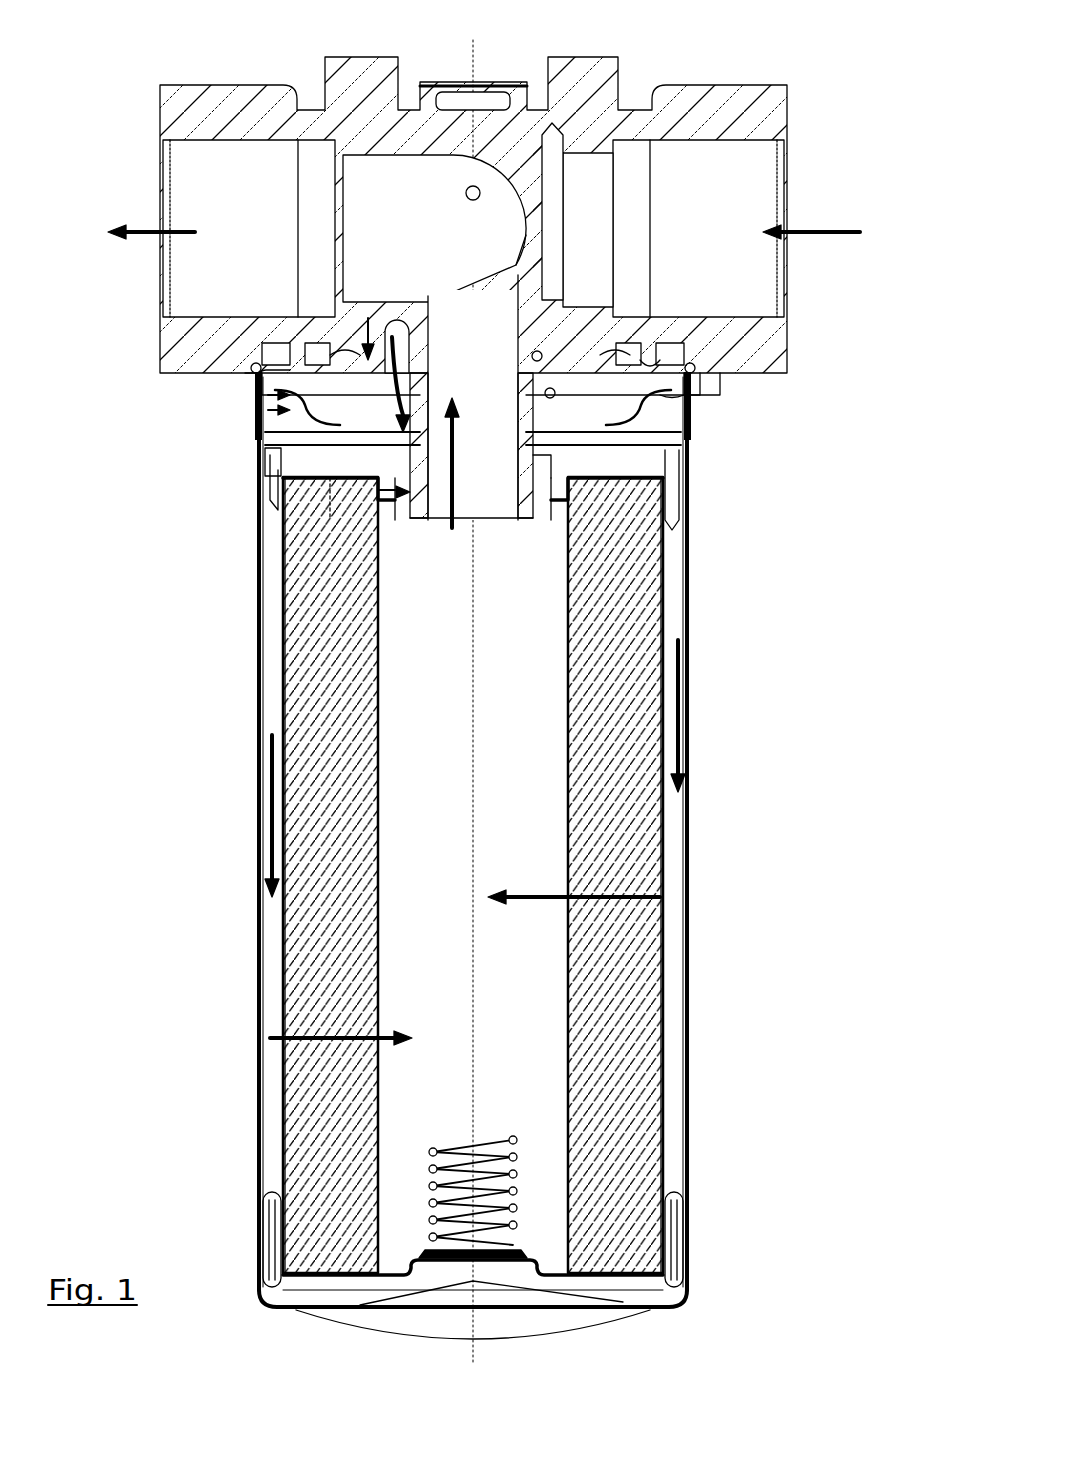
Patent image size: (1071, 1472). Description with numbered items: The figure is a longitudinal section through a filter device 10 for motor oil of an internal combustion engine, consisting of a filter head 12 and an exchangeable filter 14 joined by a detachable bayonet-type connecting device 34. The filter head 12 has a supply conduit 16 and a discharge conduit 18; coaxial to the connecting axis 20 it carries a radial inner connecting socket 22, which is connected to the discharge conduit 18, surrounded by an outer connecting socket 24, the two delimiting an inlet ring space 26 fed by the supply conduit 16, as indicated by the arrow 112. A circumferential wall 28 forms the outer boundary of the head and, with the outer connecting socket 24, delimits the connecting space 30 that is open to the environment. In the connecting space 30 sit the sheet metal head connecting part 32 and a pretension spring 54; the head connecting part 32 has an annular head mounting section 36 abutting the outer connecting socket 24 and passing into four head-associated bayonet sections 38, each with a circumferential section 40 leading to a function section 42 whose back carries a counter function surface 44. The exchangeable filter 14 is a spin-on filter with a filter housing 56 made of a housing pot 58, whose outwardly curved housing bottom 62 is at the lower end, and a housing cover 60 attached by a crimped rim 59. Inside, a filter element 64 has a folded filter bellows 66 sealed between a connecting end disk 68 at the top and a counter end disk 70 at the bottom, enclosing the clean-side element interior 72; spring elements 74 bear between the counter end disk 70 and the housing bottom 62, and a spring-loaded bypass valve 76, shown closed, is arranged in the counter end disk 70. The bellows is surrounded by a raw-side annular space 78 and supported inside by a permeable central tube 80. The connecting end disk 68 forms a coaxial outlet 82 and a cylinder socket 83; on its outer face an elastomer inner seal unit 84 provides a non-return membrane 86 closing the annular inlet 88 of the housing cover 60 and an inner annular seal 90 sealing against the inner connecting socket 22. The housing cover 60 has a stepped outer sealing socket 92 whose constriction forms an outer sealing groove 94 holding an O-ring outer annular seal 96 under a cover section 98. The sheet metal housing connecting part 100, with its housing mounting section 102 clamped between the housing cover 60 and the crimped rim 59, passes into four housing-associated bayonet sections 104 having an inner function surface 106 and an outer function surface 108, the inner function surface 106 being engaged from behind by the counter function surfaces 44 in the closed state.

The filter device 10 is at (113, 84).
The filter head 12 is at (265, 80).
The exchangeable filter 14 is at (245, 852).
The supply conduit 16 is at (755, 183).
The discharge conduit 18 is at (190, 160).
The connecting axis 20 is at (470, 1002).
The inner connecting socket 22 is at (425, 365).
The outer connecting socket 24 is at (368, 318).
The inlet ring space 26 is at (390, 330).
The circumferential wall 28 is at (720, 380).
The connecting space 30 is at (720, 365).
The head connecting part 32 is at (345, 355).
The connecting device 34 is at (262, 395).
The head mounting section 36 is at (595, 370).
The head-associated bayonet sections 38 is at (650, 355).
The circumferential section 40 is at (530, 505).
The function section 42 is at (570, 495).
The counter function surface 44 is at (640, 360).
The pretension spring 54 is at (262, 385).
The filter housing 56 is at (245, 1023).
The housing pot 58 is at (266, 1136).
The crimped rim 59 is at (695, 390).
The housing cover 60 is at (270, 442).
The housing bottom 62 is at (310, 1313).
The filter element 64 is at (272, 950).
The filter bellows 66 is at (608, 1047).
The connecting end disk 68 is at (662, 482).
The counter end disk 70 is at (270, 1276).
The element interior 72 is at (488, 1033).
The spring elements 74 is at (590, 1291).
The bypass valve 76 is at (470, 1160).
The raw-side annular space 78 is at (680, 1060).
The central tube 80 is at (560, 932).
The outlet 82 is at (477, 513).
The cylinder socket 83 is at (520, 513).
The inner seal unit 84 is at (405, 495).
The non-return membrane 86 is at (372, 492).
The inlet 88 is at (350, 485).
The inner annular seal 90 is at (405, 493).
The outer sealing socket 92 is at (555, 425).
The outer sealing groove 94 is at (548, 393).
The outer annular seal 96 is at (535, 356).
The cover section 98 is at (520, 345).
The housing connecting part 100 is at (266, 410).
The housing mounting section 102 is at (266, 428).
The housing-associated bayonet sections 104 is at (670, 400).
The inner function surface 106 is at (276, 482).
The outer function surface 108 is at (300, 375).
The arrow 112 is at (862, 232).